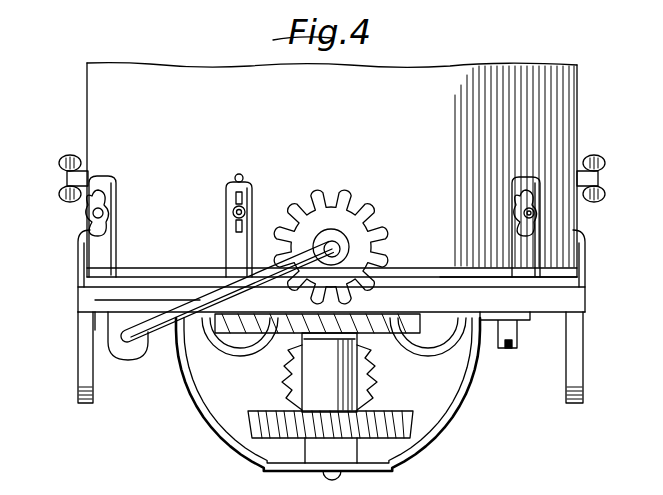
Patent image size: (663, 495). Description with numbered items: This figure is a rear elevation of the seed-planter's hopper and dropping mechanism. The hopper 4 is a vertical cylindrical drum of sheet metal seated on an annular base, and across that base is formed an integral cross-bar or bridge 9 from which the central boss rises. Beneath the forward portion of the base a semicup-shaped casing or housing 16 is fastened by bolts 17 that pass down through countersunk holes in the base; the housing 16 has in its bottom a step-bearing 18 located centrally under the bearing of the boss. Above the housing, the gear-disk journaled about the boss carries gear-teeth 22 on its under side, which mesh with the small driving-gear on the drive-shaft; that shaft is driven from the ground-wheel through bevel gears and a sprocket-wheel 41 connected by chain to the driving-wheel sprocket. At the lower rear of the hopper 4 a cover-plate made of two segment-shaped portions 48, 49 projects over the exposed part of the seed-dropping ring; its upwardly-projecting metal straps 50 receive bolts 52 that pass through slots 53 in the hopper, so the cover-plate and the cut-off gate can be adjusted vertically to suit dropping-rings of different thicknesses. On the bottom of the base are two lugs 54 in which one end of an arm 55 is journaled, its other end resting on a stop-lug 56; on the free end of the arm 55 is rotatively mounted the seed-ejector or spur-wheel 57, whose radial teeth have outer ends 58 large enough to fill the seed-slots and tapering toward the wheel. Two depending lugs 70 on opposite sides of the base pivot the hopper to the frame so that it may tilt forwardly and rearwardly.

The hopper 4 is at (165, 151).
The cross-bar or bridge 9 is at (244, 346).
The casing or housing 16 is at (452, 410).
The bolts 17 is at (505, 352).
The step-bearing 18 is at (318, 447).
The gear-teeth 22 is at (412, 343).
The sprocket-wheel 41 is at (338, 476).
The segment-shaped portion 48 is at (165, 286).
The segment-shaped portion 49 is at (462, 283).
The metal straps 50 is at (240, 260).
The bolts 52 is at (232, 212).
The slots 53 is at (236, 178).
The lugs 54 is at (128, 360).
The arm 55 is at (190, 307).
The stop-lug 56 is at (223, 338).
The seed-ejector or spur-wheel 57 is at (330, 232).
The outer ends of teeth 58 is at (343, 186).
The depending lugs 70 is at (78, 372).